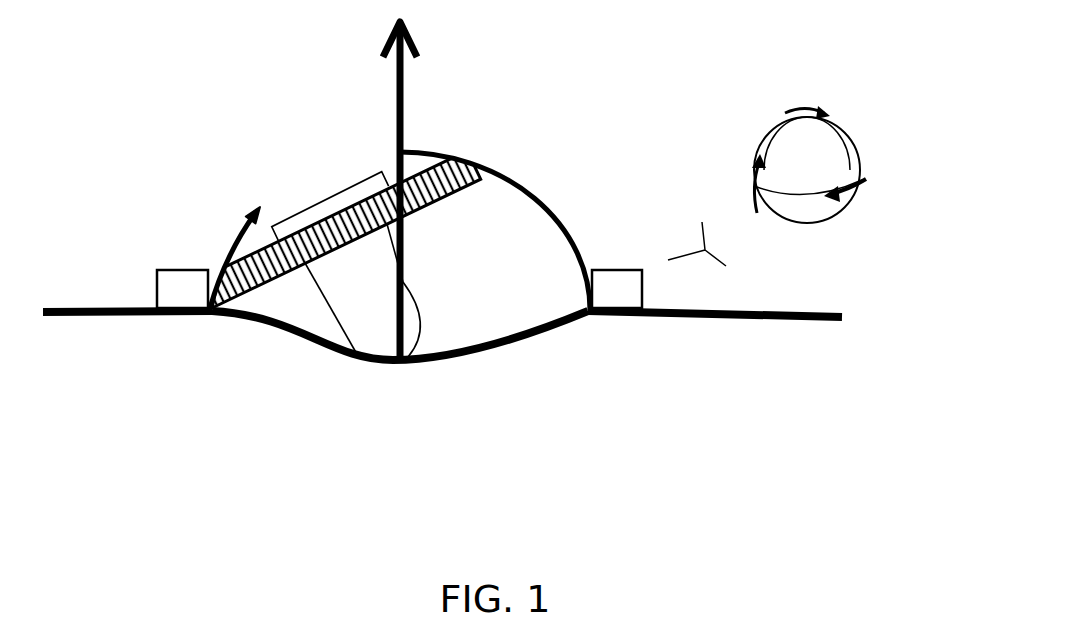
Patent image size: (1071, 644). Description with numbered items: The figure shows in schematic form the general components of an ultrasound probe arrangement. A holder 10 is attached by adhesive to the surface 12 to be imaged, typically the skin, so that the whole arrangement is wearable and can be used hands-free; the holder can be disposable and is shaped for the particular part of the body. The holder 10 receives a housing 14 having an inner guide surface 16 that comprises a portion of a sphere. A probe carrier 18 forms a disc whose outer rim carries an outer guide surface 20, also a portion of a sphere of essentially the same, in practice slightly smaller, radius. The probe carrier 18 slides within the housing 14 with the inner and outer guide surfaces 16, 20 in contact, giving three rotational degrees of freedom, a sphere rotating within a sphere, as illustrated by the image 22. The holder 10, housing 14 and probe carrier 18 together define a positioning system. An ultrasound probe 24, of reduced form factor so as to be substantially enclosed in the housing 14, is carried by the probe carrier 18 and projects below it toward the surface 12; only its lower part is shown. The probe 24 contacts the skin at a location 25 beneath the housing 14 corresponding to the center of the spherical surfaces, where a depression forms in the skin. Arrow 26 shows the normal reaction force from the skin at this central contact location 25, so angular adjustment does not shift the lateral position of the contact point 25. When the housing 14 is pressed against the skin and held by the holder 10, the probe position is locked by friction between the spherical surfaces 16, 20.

The holder 10 is at (157, 295).
The surface 12 is at (517, 426).
The housing 14 is at (190, 228).
The inner guide surface 16 is at (259, 212).
The probe carrier 18 is at (424, 208).
The outer guide surface 20 is at (457, 172).
The image 22 is at (889, 123).
The ultrasound probe 24 is at (413, 303).
The contact location 25 is at (387, 363).
The arrow 26 is at (396, 112).